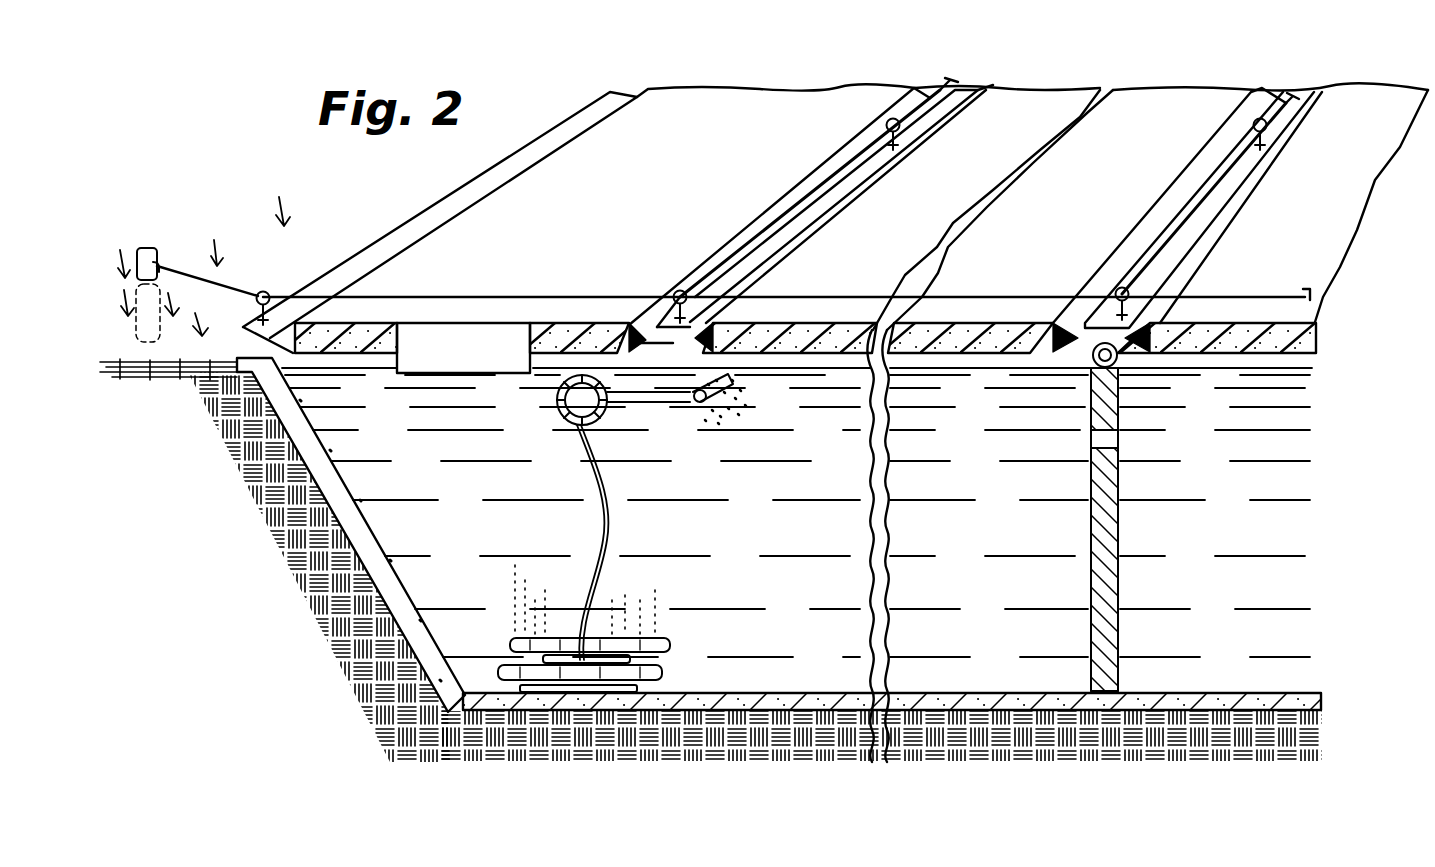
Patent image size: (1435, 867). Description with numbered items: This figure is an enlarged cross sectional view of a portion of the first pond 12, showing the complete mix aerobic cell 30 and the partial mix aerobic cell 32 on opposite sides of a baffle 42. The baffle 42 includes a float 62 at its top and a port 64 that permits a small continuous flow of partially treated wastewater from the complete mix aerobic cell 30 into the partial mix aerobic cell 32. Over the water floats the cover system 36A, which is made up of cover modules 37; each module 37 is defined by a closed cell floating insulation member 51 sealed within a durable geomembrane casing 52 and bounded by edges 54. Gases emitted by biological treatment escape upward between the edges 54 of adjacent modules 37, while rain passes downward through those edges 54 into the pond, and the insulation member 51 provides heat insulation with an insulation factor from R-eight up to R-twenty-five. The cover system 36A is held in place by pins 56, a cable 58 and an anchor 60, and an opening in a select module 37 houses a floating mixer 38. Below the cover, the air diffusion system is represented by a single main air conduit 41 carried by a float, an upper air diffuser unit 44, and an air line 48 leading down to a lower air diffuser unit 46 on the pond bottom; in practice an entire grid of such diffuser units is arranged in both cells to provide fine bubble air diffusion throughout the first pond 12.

The first pond 12 is at (1199, 751).
The complete mix aerobic cell 30 is at (827, 644).
The partial mix aerobic cell 32 is at (1270, 629).
The cover system 36A is at (803, 112).
The cover module 37 is at (624, 203).
The floating mixer 38 is at (397, 358).
The main air conduit 41 is at (595, 422).
The baffle 42 is at (571, 425).
The upper air diffuser unit 44 is at (715, 400).
The lower air diffuser unit 46 is at (660, 640).
The air line 48 is at (607, 528).
The floating insulation member 51 is at (383, 325).
The geomembrane casing 52 is at (590, 285).
The edges 54 is at (373, 253).
The pins 56 is at (258, 310).
The cable 58 is at (190, 272).
The anchor 60 is at (147, 247).
The float 62 is at (1117, 360).
The port 64 is at (1120, 438).